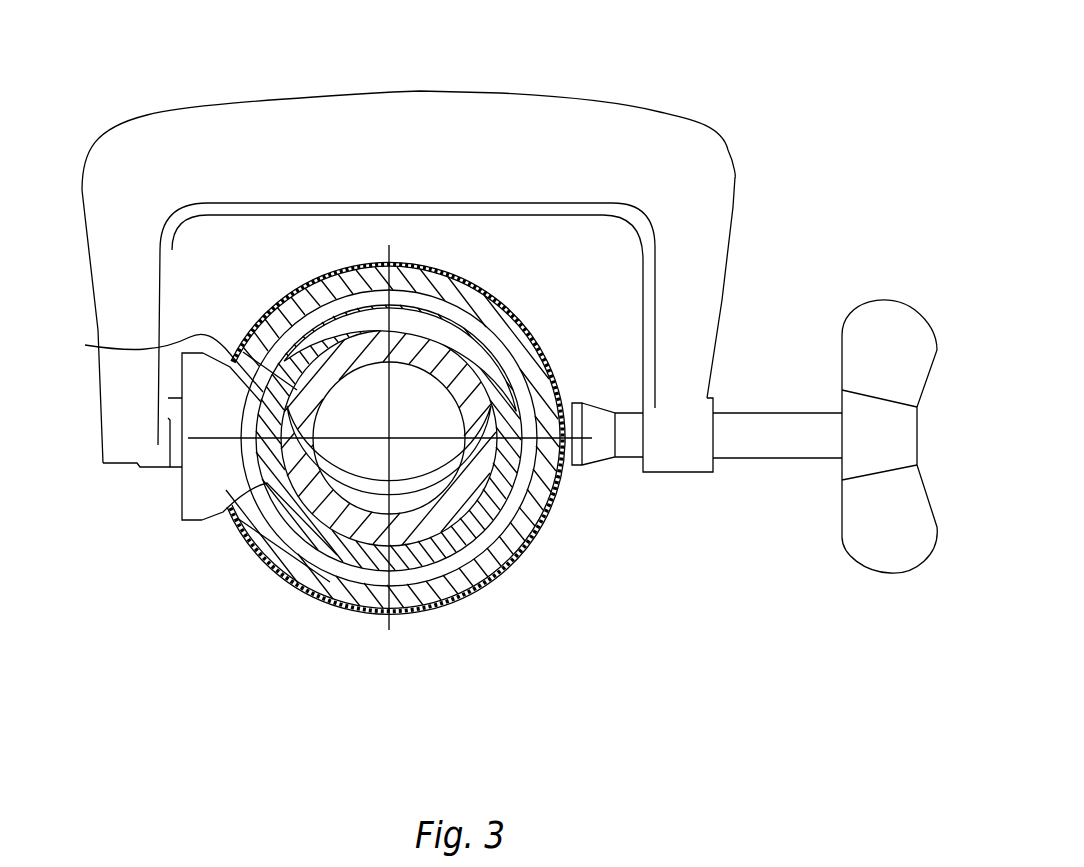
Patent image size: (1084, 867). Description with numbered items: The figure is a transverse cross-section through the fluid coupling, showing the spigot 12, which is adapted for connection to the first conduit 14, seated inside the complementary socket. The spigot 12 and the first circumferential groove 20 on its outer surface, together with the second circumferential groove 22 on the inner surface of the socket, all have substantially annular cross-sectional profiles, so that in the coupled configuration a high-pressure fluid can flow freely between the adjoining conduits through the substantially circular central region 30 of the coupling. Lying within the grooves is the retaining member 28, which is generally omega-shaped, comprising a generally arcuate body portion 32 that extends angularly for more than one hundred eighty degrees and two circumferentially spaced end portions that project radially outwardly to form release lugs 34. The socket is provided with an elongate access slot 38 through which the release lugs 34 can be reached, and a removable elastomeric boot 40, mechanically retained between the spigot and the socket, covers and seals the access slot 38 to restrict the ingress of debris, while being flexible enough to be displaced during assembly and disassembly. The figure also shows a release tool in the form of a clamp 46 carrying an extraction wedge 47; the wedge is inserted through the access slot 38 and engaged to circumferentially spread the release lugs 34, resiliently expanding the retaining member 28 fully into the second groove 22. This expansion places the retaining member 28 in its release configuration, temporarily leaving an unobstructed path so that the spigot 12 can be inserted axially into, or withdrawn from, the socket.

The spigot 12 is at (543, 512).
The first conduit 14 is at (465, 298).
The first circumferential groove 20 is at (507, 330).
The second circumferential groove 22 is at (445, 563).
The retaining member 28 is at (505, 530).
The central region 30 is at (377, 475).
The arcuate body portion 32 is at (562, 388).
The release lugs 34 is at (170, 577).
The access slot 38 is at (258, 332).
The elastomeric boot 40 is at (318, 292).
The clamp 46 is at (618, 137).
The extraction wedge 47 is at (207, 463).